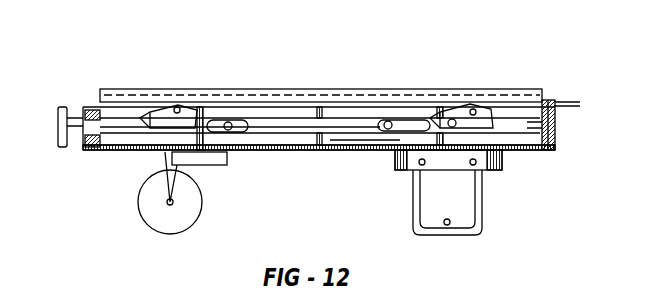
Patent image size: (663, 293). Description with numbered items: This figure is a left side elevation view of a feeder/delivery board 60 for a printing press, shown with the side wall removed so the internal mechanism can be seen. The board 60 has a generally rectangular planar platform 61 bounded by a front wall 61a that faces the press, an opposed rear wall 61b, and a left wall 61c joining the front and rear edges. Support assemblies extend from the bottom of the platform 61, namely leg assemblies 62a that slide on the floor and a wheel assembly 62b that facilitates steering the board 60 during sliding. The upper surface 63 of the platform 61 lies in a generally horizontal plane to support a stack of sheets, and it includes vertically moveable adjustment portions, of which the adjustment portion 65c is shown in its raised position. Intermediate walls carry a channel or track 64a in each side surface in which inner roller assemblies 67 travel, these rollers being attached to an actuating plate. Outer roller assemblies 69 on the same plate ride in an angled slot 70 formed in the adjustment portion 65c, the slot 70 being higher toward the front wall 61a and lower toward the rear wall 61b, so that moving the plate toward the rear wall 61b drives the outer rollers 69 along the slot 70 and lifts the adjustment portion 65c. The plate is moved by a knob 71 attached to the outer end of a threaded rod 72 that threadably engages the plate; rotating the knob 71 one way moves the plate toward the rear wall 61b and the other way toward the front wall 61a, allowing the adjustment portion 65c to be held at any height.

The feeder/delivery board 60 is at (548, 53).
The planar platform 61 is at (557, 140).
The front wall 61a is at (557, 118).
The rear wall 61b is at (80, 149).
The left wall 61c is at (362, 133).
The leg assemblies 62a is at (443, 197).
The wheel assembly 62b is at (175, 200).
The upper surface 63 is at (148, 114).
The channel or track 64a is at (273, 128).
The adjustment portion 65c is at (403, 90).
The inner roller assemblies 67 is at (242, 127).
The outer roller assemblies 69 is at (165, 118).
The slot 70 is at (190, 118).
The knob 71 is at (57, 126).
The threaded rod 72 is at (120, 116).